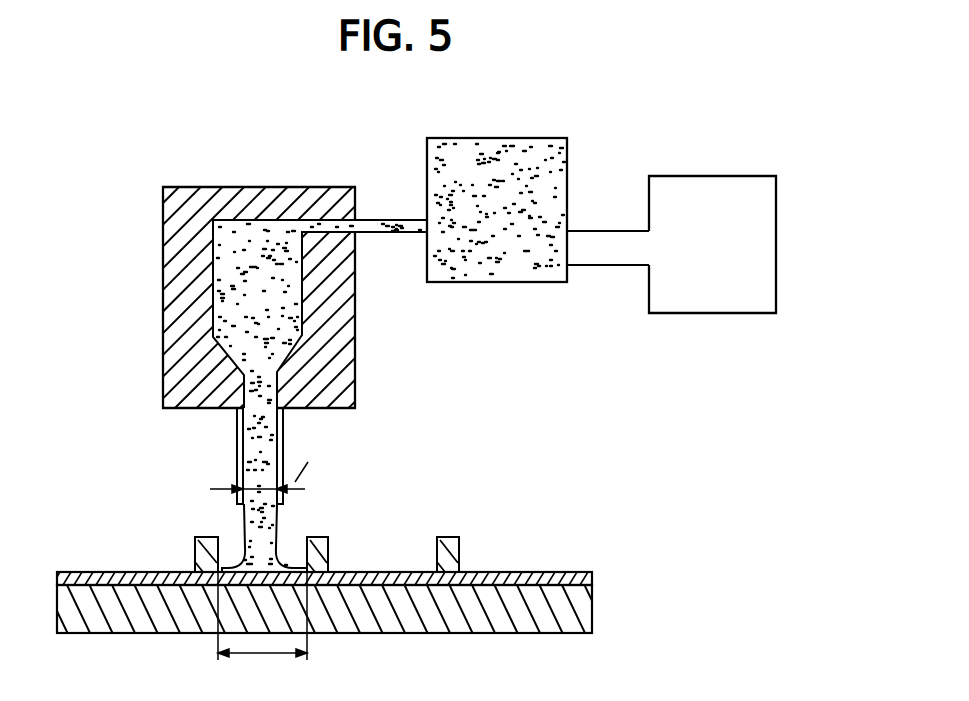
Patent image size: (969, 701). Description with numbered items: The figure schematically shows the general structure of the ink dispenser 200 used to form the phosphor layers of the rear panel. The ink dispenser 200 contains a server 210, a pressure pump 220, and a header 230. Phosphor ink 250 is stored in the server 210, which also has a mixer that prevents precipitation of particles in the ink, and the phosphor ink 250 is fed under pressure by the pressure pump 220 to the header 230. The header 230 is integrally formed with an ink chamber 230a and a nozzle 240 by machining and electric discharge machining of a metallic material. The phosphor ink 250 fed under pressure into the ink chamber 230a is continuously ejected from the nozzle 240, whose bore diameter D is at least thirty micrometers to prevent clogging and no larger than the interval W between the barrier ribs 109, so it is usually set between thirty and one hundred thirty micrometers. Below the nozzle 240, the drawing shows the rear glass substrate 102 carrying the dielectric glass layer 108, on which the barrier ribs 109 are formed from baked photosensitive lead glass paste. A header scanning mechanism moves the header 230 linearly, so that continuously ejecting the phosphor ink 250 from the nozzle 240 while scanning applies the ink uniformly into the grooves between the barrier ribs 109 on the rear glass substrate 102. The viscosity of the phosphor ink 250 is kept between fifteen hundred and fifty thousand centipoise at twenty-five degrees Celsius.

The ink dispenser 200 is at (357, 167).
The header 230 is at (355, 383).
The ink chamber 230a is at (225, 287).
The pressure pump 220 is at (507, 282).
The server 210 is at (715, 313).
The nozzle 240 is at (235, 463).
The phosphor ink 250 is at (283, 537).
The barrier ribs 109 is at (195, 540).
The dielectric glass layer 108 is at (593, 580).
The rear glass substrate 102 is at (592, 607).